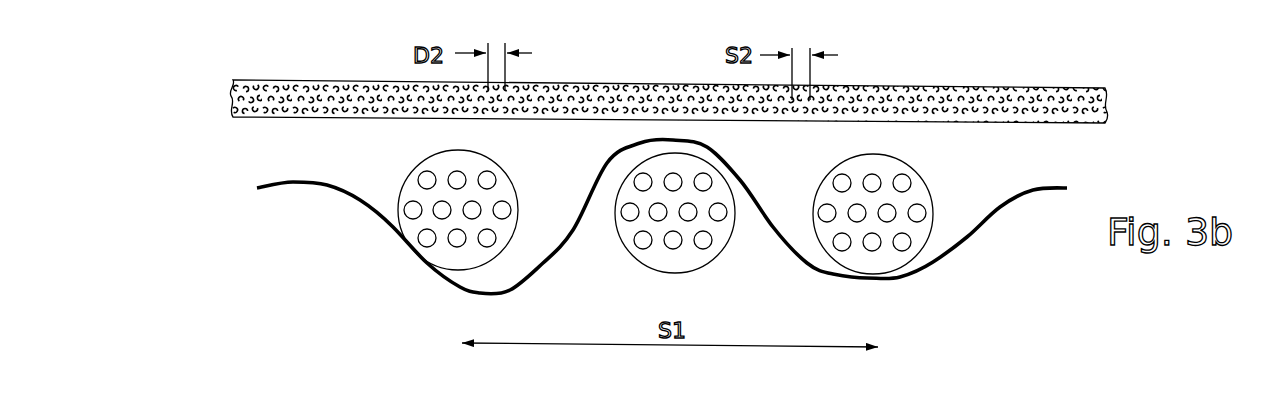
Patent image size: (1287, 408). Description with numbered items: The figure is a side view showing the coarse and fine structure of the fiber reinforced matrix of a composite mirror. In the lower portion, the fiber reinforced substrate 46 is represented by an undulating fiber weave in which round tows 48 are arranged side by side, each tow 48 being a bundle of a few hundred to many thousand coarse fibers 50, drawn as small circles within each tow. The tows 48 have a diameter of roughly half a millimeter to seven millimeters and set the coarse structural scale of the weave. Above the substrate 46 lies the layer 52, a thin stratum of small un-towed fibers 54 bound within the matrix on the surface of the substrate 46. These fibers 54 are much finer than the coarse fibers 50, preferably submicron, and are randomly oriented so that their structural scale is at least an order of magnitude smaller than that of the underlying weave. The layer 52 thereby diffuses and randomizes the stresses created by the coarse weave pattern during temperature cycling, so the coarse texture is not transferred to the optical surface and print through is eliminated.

The substrate 46 is at (219, 148).
The tow 48 is at (928, 194).
The fibers 50 is at (832, 229).
The layer 52 is at (226, 70).
The un-towed fibers 54 is at (365, 97).